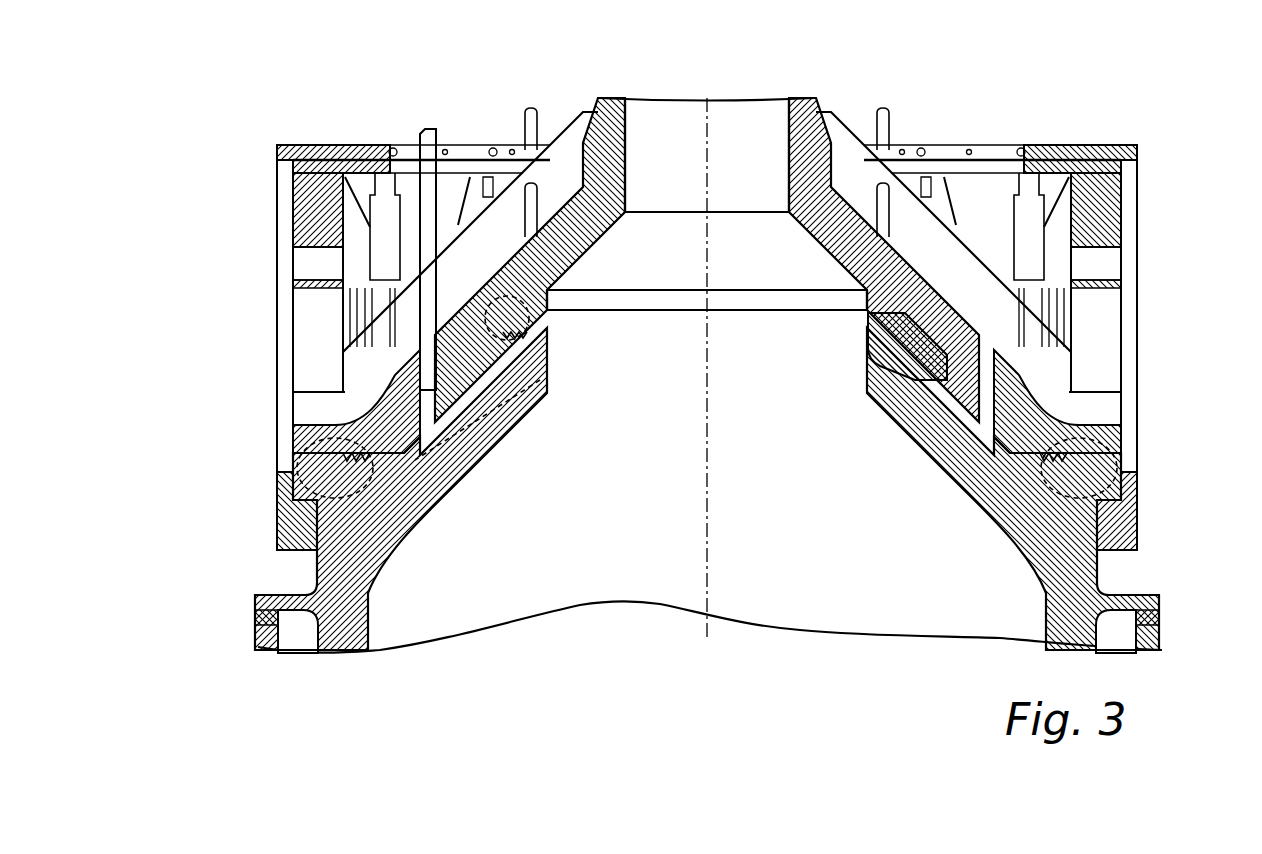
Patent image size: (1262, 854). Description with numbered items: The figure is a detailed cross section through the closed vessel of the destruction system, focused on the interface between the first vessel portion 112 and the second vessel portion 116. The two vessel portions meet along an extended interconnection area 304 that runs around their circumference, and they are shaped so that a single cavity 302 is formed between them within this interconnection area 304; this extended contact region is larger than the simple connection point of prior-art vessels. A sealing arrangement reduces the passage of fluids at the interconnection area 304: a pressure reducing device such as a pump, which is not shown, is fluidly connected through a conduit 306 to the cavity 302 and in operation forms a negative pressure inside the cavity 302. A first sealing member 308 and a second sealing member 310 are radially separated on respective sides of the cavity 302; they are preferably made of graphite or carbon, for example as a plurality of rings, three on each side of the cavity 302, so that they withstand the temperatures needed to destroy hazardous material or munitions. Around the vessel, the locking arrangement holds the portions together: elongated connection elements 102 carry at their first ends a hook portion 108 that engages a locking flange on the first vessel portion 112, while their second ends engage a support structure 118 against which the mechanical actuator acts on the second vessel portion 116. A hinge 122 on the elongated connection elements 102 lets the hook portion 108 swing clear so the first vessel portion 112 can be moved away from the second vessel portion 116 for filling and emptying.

The elongated connection element 102 is at (285, 337).
The hook portion 108 is at (290, 528).
The first vessel portion 112 is at (337, 643).
The second vessel portion 116 is at (607, 140).
The support structure 118 is at (952, 147).
The hinge 122 is at (1077, 143).
The cavity 302 is at (418, 411).
The interconnection area 304 is at (467, 443).
The conduit 306 is at (428, 152).
The first sealing member 308 is at (877, 377).
The second sealing member 310 is at (1022, 514).